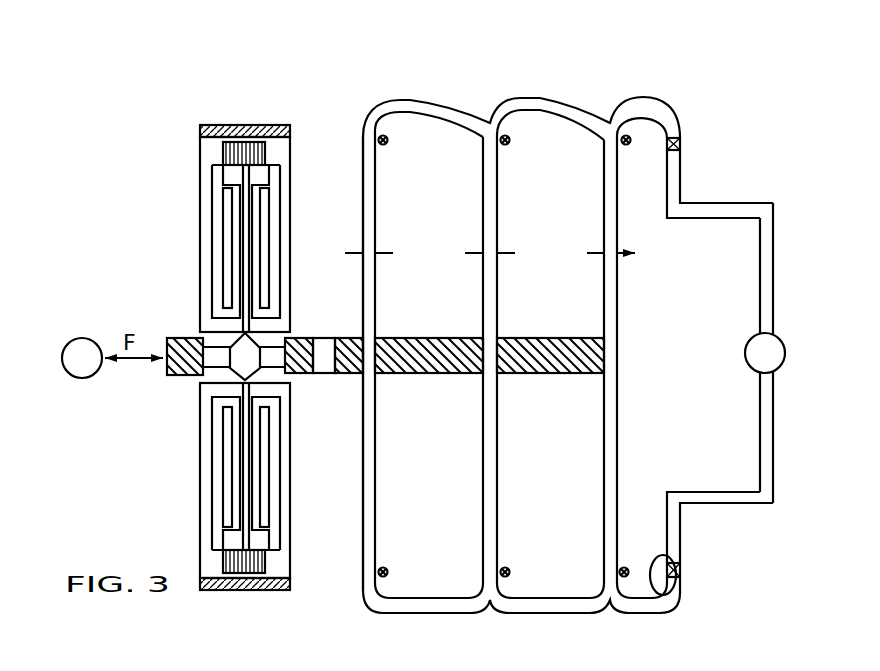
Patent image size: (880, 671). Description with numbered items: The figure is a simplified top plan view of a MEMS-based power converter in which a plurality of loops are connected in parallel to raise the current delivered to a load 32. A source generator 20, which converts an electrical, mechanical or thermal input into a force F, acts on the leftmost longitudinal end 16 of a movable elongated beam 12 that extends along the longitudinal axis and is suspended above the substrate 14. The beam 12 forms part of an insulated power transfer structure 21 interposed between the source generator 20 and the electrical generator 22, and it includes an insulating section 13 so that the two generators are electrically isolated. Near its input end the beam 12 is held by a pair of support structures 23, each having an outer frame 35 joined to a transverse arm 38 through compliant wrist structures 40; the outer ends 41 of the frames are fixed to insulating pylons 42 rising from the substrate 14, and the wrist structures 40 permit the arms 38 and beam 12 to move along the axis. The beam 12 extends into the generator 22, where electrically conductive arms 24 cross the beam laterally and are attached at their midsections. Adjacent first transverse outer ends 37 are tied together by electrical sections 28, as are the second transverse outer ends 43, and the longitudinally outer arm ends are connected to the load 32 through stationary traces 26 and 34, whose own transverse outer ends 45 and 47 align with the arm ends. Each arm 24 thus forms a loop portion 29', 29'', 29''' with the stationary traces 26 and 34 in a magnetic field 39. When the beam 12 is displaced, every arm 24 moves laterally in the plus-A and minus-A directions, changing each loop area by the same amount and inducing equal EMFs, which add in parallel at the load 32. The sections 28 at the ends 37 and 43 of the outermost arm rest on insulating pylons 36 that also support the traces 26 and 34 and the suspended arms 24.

The movable elongated beam 12 is at (307, 379).
The insulating section 13 is at (322, 338).
The substrate 14 is at (351, 643).
The leftmost longitudinal end 16 is at (180, 338).
The source generator 20 is at (87, 337).
The insulated power transfer structure 21 is at (334, 133).
The electrical generator 22 is at (594, 42).
The support structure 23 is at (196, 177).
The movable transverse arm 24 is at (376, 206).
The stationary trace 26 is at (681, 175).
The electrical section 28 is at (384, 101).
The first loop portion 29' is at (429, 317).
The second loop portion 29'' is at (550, 319).
The third loop portion 29''' is at (662, 318).
The load 32 is at (780, 338).
The stationary trace 34 is at (760, 203).
The outer frame 35 is at (200, 218).
The insulating pylon 36 is at (681, 140).
The first transverse outer end 37 is at (362, 135).
The transverse arm 38 is at (243, 282).
The magnetic field 39 is at (388, 143).
The wrist structure 40 is at (236, 133).
The outer end 41 is at (218, 121).
The insulating pylon 42 is at (255, 140).
The second transverse outer end 43 is at (363, 576).
The first transverse outer end 45 is at (683, 153).
The second transverse outer end 47 is at (655, 594).